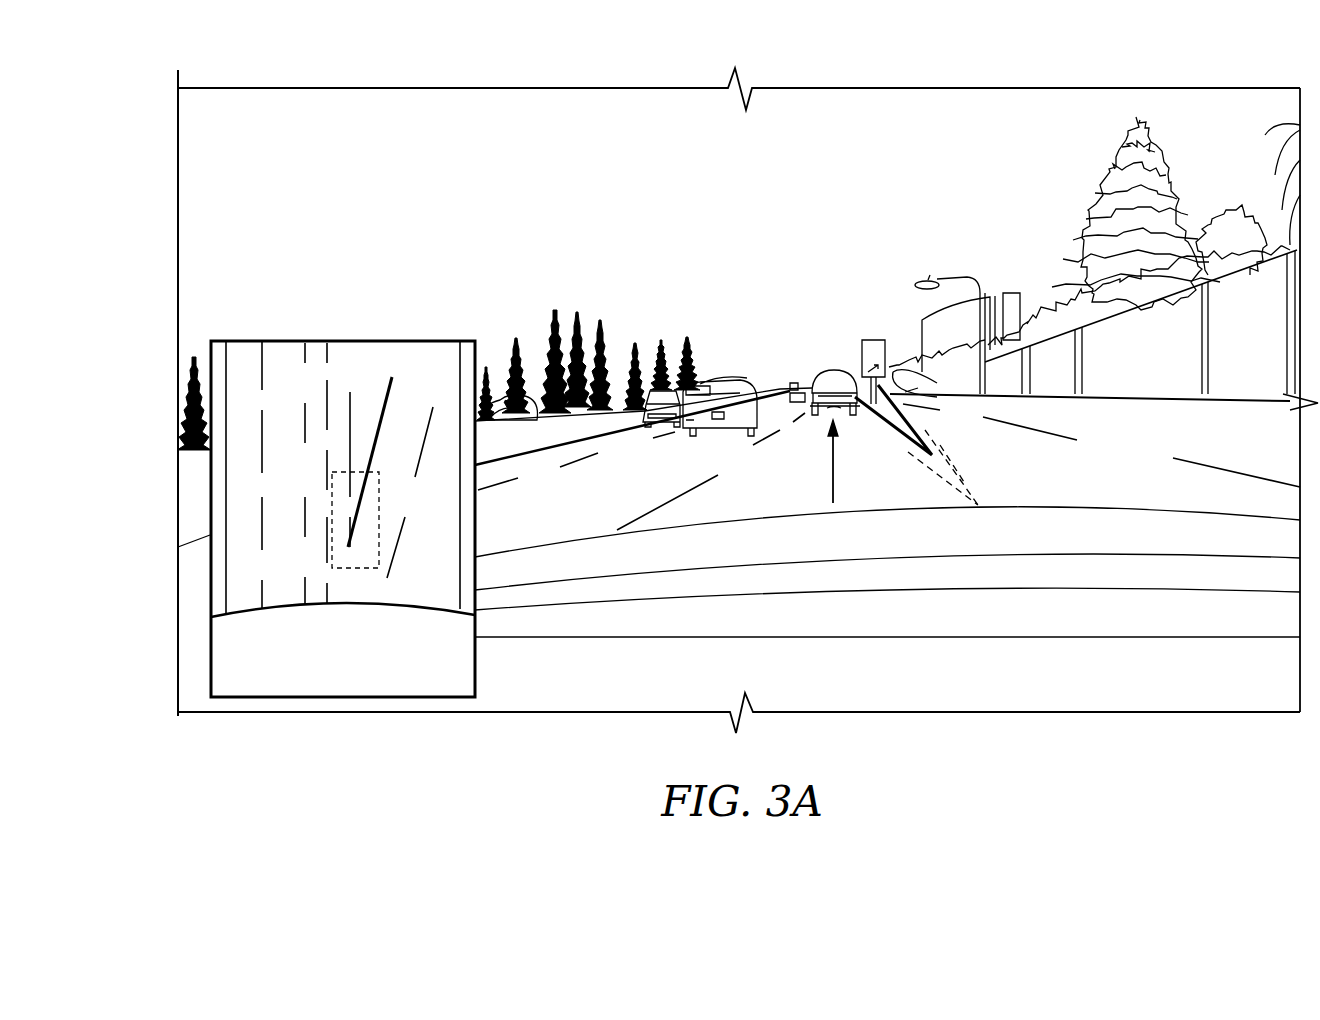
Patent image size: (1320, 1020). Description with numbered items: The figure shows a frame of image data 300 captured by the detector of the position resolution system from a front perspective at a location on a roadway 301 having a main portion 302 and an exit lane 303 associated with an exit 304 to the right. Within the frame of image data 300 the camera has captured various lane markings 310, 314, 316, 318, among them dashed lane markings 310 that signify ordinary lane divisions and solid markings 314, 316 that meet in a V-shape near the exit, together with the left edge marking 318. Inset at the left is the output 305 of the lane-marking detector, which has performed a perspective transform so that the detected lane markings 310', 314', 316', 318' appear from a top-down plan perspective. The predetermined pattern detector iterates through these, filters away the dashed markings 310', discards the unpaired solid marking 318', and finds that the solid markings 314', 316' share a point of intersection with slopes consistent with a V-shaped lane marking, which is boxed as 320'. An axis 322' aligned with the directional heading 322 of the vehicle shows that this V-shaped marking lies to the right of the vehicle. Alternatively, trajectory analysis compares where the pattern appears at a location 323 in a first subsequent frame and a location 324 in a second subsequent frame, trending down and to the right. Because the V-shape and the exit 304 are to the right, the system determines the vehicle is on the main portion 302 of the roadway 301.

The frame of image data 300 is at (247, 220).
The roadway 301 is at (850, 234).
The main portion 302 is at (588, 490).
The exit lane 303 is at (938, 398).
The exit 304 is at (1015, 320).
The output of the lane-marking detector 305 is at (210, 652).
The lane markings 310 is at (889, 441).
The detected dashed lane markings 310' is at (325, 486).
The lane marking 314 is at (949, 426).
The detected solid line lane marking 314' is at (419, 473).
The lane marking 316 is at (889, 430).
The detected solid line lane marking 316' is at (221, 469).
The lane marking 318 is at (484, 424).
The detected solid line lane marking 318' is at (245, 458).
The region of interest box 320' is at (369, 562).
The directional heading 322 is at (872, 483).
The axis 322' is at (370, 417).
The location 323 is at (955, 472).
The location 324 is at (980, 505).